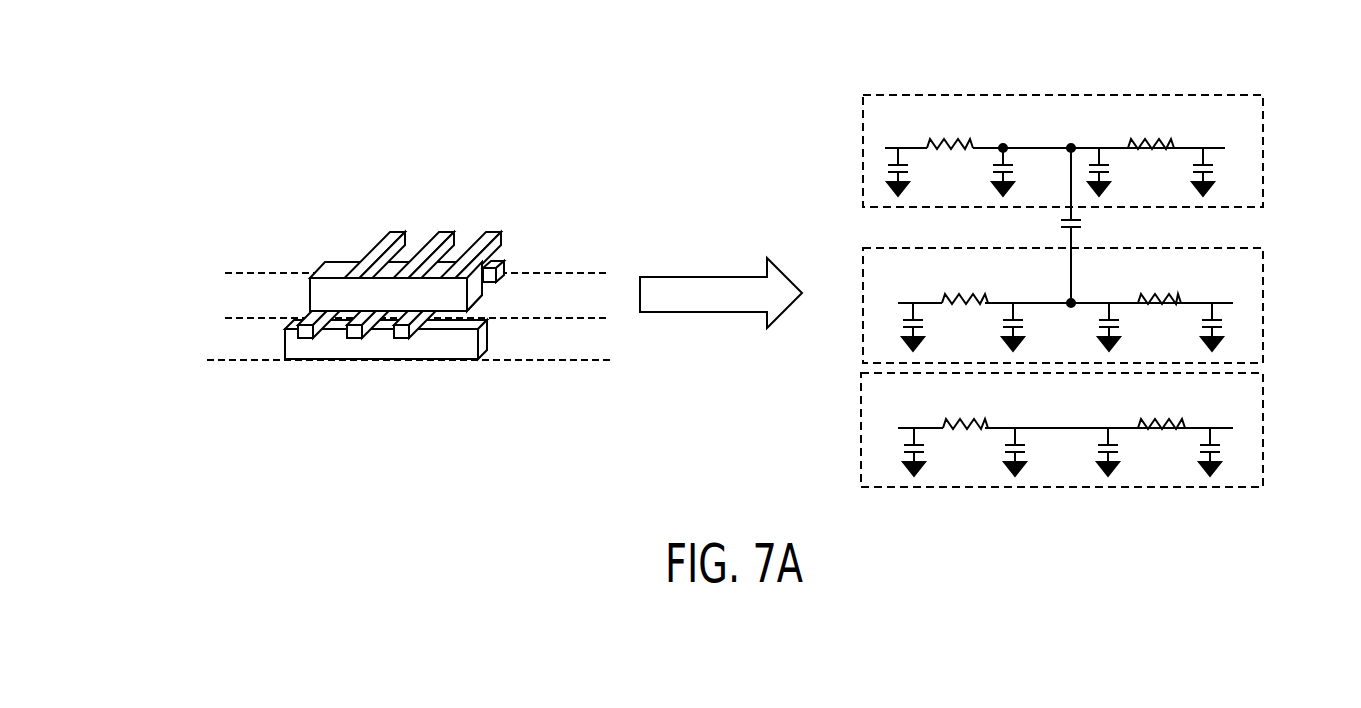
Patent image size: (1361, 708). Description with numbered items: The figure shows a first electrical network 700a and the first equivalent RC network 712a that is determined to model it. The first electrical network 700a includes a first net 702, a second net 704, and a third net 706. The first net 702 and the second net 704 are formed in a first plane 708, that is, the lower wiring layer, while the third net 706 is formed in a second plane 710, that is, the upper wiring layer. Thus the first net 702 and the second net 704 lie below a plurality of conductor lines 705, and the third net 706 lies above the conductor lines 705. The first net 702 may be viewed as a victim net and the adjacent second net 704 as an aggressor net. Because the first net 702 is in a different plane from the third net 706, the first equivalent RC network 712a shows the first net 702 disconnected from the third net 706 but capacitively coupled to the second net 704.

The first electrical network 700a is at (282, 210).
The first net 702 is at (470, 352).
The second net 704 is at (503, 262).
The conductor lines 705 is at (397, 234).
The third net 706 is at (312, 276).
The first plane 708 is at (206, 346).
The second plane 710 is at (226, 286).
The first equivalent RC network 712a is at (778, 106).